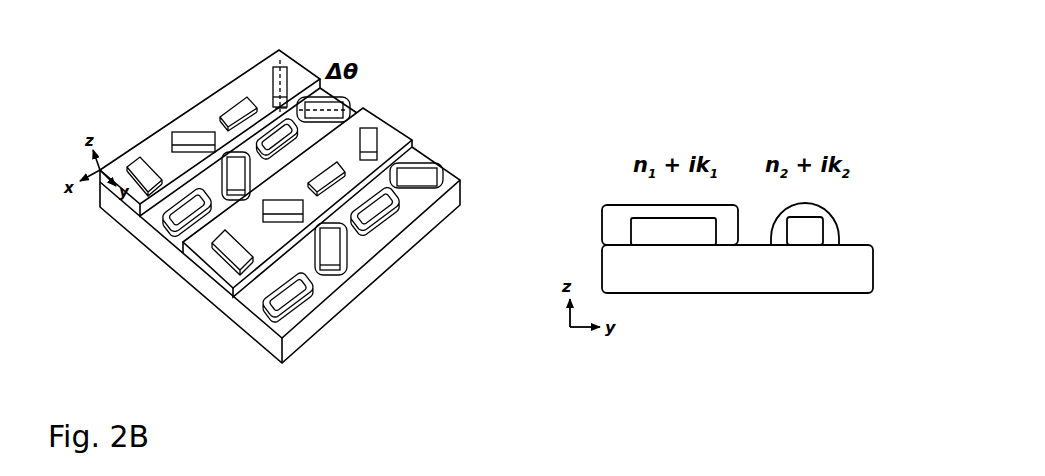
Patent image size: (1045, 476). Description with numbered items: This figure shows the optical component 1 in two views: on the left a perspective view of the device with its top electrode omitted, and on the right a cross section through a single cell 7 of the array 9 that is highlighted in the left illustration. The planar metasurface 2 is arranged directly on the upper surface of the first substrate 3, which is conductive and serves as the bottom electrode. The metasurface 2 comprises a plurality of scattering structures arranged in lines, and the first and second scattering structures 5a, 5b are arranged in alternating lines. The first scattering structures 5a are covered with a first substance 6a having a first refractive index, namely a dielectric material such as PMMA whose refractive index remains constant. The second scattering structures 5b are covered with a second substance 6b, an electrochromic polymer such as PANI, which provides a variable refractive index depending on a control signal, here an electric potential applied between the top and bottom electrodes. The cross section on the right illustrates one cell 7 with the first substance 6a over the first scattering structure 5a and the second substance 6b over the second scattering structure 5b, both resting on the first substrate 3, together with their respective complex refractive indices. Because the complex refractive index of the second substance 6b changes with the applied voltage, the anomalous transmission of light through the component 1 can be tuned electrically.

The optical component 1 is at (158, 101).
The planar metasurface 2 is at (433, 64).
The first substrate 3 is at (860, 270).
The first scattering structures 5a is at (372, 128).
The second scattering structures 5b is at (328, 262).
The first substance 6a is at (397, 142).
The second substance 6b is at (342, 257).
The cell 7 is at (282, 249).
The array 9 is at (168, 307).